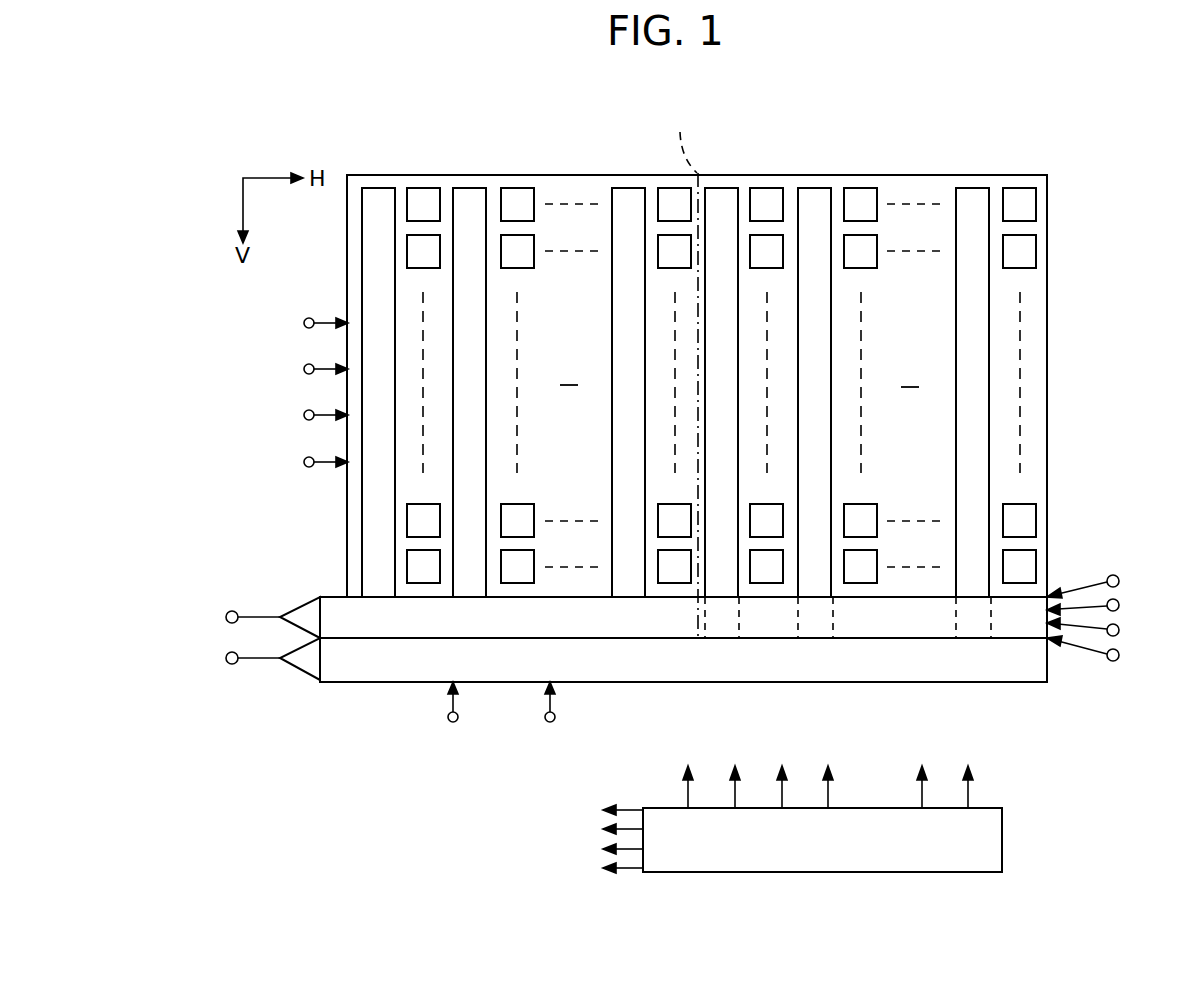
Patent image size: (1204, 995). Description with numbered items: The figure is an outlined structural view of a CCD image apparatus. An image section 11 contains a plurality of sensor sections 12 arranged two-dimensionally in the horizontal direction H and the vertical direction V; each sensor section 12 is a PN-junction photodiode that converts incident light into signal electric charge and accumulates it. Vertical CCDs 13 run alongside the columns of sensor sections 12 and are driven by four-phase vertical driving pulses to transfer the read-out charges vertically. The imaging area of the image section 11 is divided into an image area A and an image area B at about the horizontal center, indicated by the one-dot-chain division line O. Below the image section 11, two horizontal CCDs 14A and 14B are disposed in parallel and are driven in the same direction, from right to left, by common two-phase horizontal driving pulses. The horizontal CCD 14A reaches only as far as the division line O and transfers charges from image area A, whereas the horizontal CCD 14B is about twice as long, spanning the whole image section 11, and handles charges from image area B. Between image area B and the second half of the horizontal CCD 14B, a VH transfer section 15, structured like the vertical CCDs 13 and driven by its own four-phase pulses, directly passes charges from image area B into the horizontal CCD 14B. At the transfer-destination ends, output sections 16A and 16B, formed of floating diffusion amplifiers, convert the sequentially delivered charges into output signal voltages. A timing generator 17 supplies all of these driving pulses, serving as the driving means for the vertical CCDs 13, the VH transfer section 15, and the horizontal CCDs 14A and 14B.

The image section 11 is at (673, 433).
The sensor sections 12 is at (422, 197).
The vertical CCDs 13 is at (727, 195).
The horizontal CCD 14A is at (625, 617).
The horizontal CCD 14B is at (900, 668).
The VH transfer section 15 is at (1018, 620).
The output section 16A is at (305, 615).
The output section 16B is at (305, 657).
The timing generator 17 is at (1002, 838).